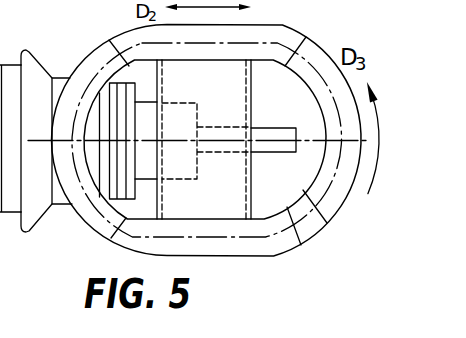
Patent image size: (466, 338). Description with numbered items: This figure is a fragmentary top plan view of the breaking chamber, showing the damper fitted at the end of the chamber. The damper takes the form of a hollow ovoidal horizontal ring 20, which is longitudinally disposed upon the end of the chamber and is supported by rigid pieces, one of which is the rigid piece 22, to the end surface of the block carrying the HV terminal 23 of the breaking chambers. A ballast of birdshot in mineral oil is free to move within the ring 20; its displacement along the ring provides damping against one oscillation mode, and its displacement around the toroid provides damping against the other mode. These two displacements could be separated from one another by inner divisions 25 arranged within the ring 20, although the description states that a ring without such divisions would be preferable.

The hollow ovoidal horizontal ring 20 is at (0, 10).
The rigid piece 22 is at (253, 109).
The HV terminal 23 is at (282, 163).
The inner divisions 25 is at (300, 44).